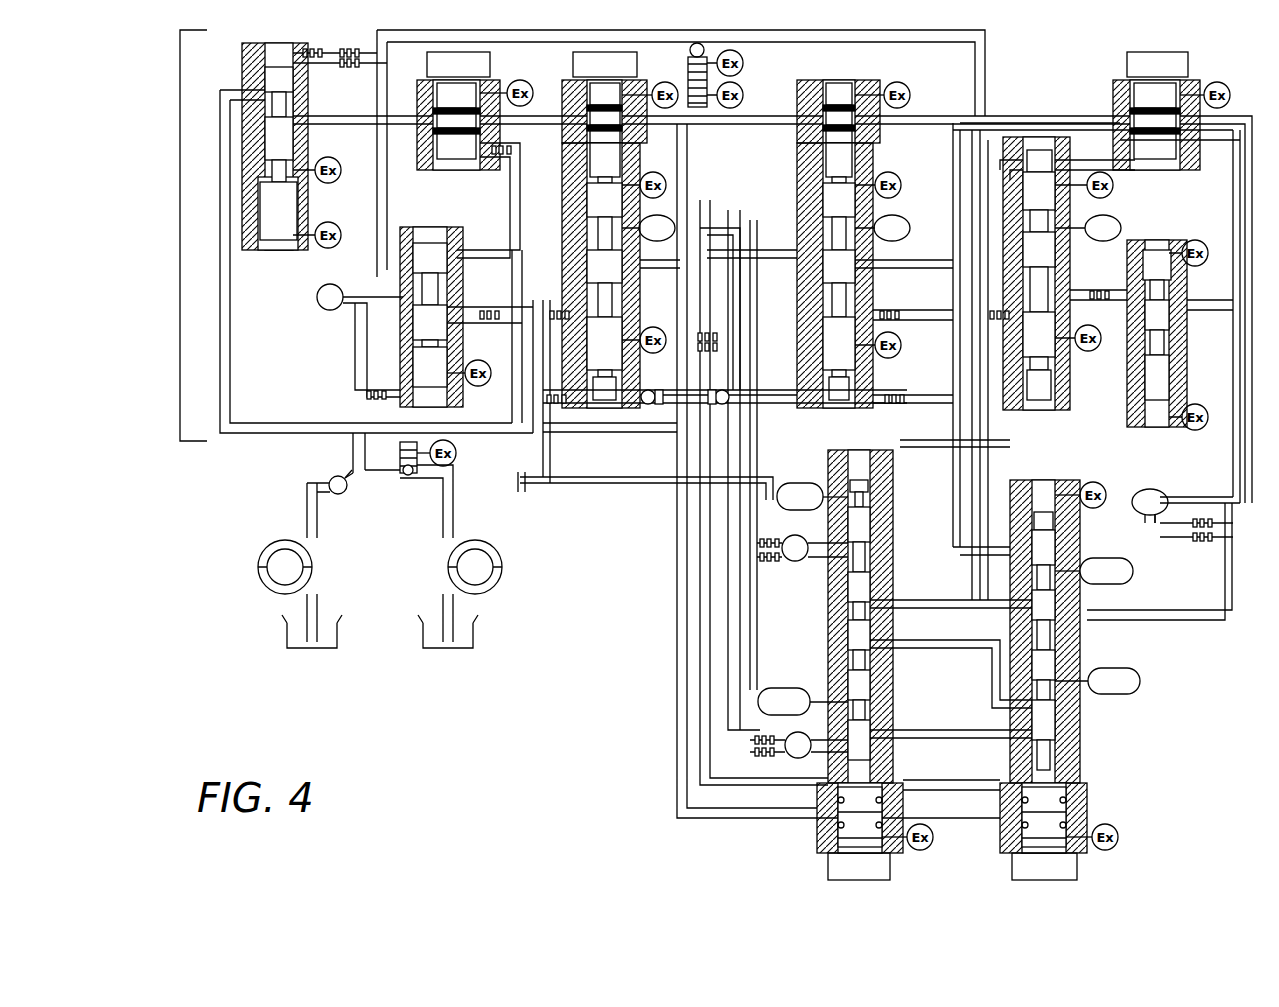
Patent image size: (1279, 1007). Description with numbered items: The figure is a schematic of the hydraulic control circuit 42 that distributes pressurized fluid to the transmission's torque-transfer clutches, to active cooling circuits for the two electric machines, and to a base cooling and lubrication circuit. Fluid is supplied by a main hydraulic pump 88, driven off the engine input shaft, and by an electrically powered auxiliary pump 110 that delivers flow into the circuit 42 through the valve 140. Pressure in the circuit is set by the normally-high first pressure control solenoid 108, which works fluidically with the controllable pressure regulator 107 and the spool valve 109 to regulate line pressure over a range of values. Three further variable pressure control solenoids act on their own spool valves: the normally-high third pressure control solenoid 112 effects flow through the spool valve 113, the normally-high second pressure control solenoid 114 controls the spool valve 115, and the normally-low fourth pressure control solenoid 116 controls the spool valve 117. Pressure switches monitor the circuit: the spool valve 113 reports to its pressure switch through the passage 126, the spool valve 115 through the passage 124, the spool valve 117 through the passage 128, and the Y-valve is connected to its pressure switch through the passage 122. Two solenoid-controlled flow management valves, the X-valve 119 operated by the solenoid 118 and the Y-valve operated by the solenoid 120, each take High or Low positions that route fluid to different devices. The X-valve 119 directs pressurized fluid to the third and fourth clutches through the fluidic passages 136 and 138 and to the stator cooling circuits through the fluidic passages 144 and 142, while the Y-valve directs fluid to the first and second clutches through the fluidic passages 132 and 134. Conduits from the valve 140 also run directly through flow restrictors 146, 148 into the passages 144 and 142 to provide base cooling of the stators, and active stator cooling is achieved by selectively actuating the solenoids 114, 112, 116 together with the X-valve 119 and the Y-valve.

The hydraulic control circuit 42 is at (178, 100).
The main hydraulic pump 88 is at (480, 583).
The controllable pressure regulator 107 is at (277, 227).
The pressure control solenoid PCS1 108 is at (438, 52).
The spool valve 109 is at (443, 257).
The auxiliary pump 110 is at (283, 583).
The pressure control solenoid PCS3 112 is at (1130, 52).
The spool valve 113 is at (1043, 265).
The pressure control solenoid PCS2 114 is at (815, 55).
The spool valve 115 is at (827, 167).
The pressure control solenoid PCS4 116 is at (590, 52).
The spool valve 117 is at (572, 212).
The solenoid 118 is at (843, 872).
The X-valve 119 is at (847, 625).
The solenoid 120 is at (1051, 668).
The passage 122 is at (1155, 488).
The passage 124 is at (925, 205).
The passage 126 is at (1118, 218).
The passage 128 is at (676, 222).
The fluidic passage 132 is at (1140, 681).
The fluidic passage 134 is at (1133, 571).
The fluidic passage 136 is at (785, 688).
The fluidic passage 138 is at (800, 483).
The valve 140 is at (334, 478).
The fluidic passage 142 is at (798, 760).
The fluidic passage 144 is at (790, 562).
The orifice 146 is at (768, 562).
The orifice 148 is at (765, 752).